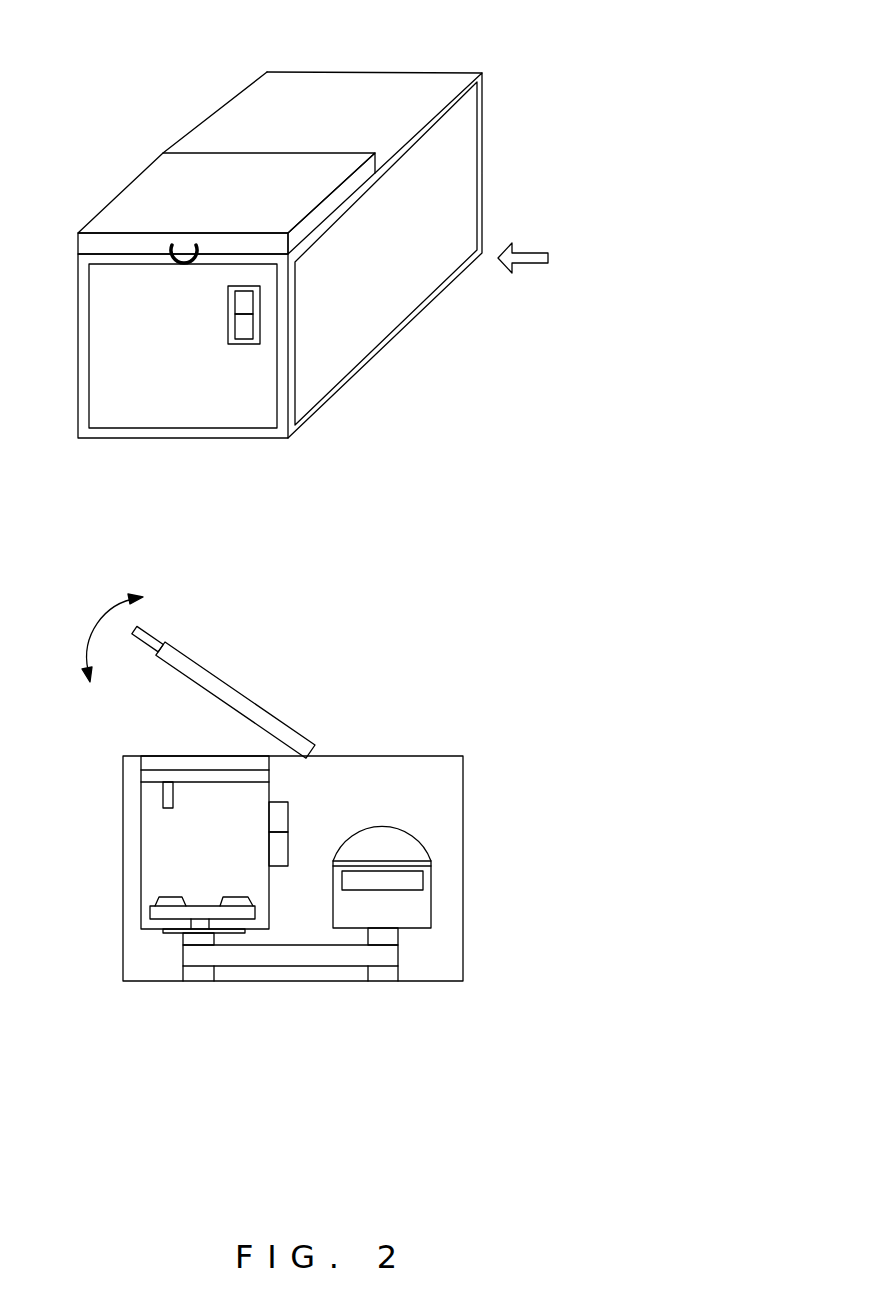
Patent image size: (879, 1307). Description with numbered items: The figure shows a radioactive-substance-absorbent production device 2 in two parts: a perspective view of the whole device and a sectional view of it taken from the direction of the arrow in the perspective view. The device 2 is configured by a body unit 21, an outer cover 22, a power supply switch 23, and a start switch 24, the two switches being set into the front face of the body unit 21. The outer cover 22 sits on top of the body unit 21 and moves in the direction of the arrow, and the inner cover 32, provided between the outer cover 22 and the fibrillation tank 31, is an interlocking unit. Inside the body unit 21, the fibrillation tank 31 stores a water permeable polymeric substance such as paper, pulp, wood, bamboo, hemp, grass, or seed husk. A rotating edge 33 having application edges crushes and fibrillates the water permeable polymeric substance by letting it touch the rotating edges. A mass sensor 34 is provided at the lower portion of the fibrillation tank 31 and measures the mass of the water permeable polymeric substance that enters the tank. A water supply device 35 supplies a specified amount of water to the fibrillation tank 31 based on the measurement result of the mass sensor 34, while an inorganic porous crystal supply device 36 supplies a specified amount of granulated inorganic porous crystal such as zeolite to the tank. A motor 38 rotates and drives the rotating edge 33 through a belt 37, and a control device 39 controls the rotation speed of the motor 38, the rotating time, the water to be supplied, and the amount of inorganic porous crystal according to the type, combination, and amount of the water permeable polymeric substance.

The radioactive-substance-absorbent production device 2 is at (528, 50).
The body unit 21 is at (460, 207).
The outer cover 22 is at (128, 197).
The power supply switch 23 is at (247, 303).
The start switch 24 is at (247, 328).
The fibrillation tank 31 is at (150, 845).
The inner cover 32 is at (150, 778).
The rotating edge 33 is at (160, 910).
The mass sensor 34 is at (173, 933).
The water supply device 35 is at (280, 852).
The inorganic porous crystal supply device 36 is at (280, 811).
The belt 37 is at (285, 957).
The motor 38 is at (412, 844).
The control device 39 is at (400, 882).